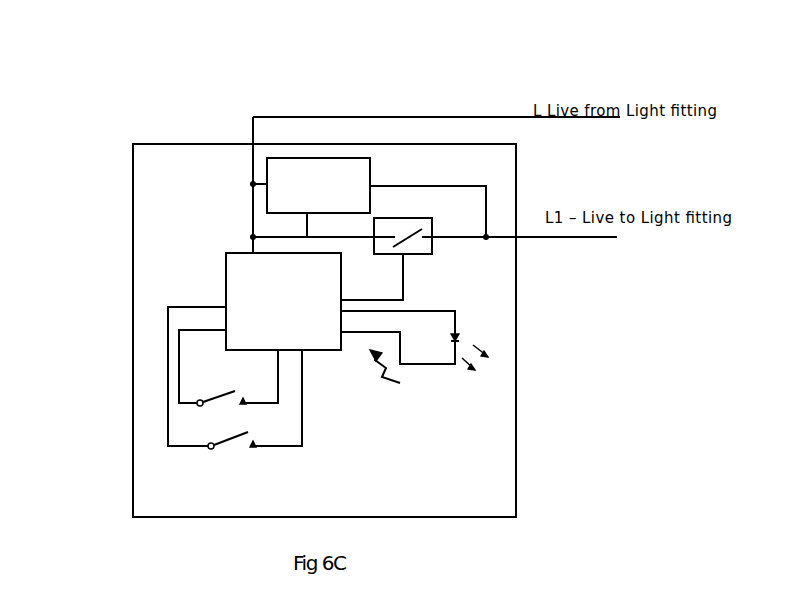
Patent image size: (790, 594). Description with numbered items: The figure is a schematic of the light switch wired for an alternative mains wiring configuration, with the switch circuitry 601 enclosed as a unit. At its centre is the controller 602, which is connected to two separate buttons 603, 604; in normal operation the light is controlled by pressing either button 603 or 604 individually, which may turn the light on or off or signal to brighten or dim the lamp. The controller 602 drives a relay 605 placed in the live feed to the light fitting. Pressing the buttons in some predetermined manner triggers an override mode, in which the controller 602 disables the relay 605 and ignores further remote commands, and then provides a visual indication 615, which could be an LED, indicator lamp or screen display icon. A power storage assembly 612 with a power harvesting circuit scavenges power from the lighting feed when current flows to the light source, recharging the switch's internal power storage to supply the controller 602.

The light switch device / enclosure 601 is at (163, 129).
The controller 602 is at (240, 272).
The button 603 is at (223, 402).
The button 604 is at (238, 445).
The relay 605 is at (422, 229).
The power storage assembly 612 is at (352, 173).
The visual indication 615 is at (465, 324).